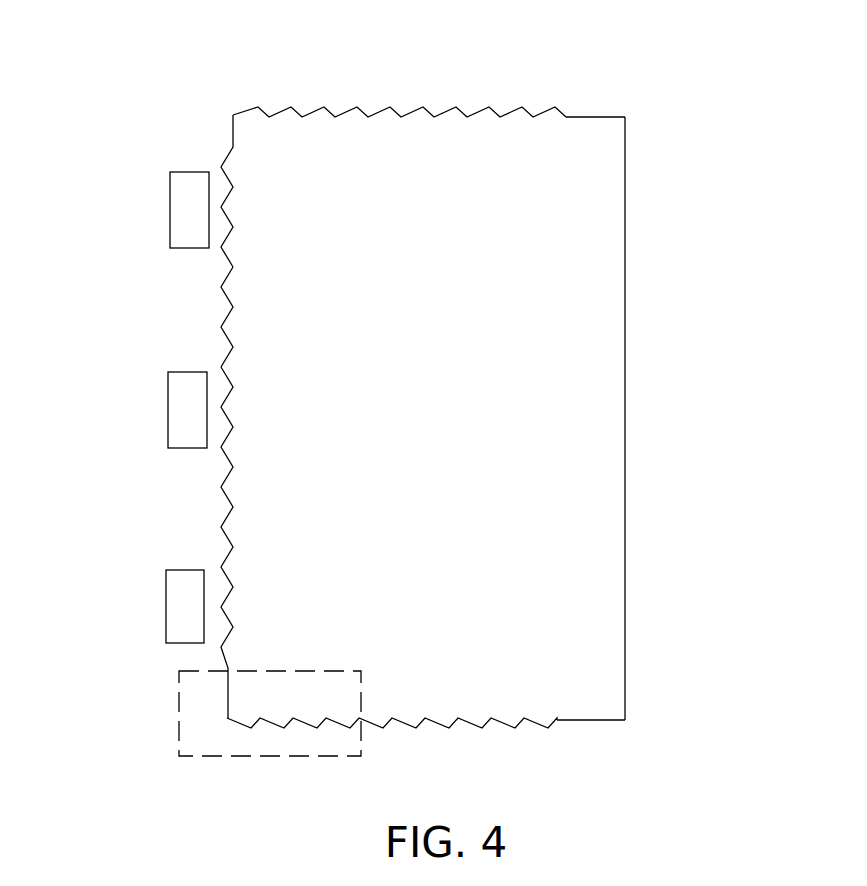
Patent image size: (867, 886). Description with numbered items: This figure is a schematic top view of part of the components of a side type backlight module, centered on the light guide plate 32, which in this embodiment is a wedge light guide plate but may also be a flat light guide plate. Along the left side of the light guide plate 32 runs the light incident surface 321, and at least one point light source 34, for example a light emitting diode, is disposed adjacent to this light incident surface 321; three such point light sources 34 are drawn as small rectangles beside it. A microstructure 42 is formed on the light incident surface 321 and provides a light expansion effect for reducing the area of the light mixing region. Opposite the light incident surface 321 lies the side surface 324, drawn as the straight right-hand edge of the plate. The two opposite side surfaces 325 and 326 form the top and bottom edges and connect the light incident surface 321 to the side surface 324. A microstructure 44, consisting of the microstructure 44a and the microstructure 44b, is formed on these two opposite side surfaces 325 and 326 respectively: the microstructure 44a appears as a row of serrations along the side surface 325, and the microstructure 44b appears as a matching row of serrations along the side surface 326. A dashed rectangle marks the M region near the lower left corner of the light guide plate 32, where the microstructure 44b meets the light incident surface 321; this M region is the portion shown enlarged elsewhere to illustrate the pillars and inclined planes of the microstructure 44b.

The light guide plate 32 is at (627, 198).
The light incident surface 321 is at (233, 135).
The side surface 324 is at (625, 465).
The side surface 325 is at (592, 117).
The side surface 326 is at (577, 720).
The microstructure 44 is at (387, 419).
The microstructure 44a is at (417, 108).
The microstructure 44b is at (347, 720).
The microstructure 42 is at (225, 320).
The point light source 34 is at (183, 568).
The M region M is at (180, 677).